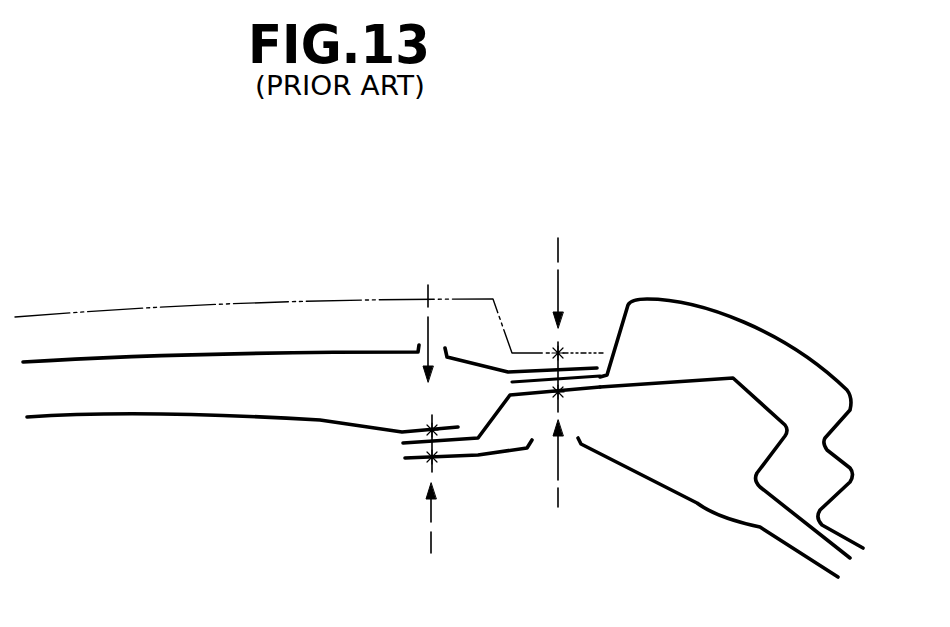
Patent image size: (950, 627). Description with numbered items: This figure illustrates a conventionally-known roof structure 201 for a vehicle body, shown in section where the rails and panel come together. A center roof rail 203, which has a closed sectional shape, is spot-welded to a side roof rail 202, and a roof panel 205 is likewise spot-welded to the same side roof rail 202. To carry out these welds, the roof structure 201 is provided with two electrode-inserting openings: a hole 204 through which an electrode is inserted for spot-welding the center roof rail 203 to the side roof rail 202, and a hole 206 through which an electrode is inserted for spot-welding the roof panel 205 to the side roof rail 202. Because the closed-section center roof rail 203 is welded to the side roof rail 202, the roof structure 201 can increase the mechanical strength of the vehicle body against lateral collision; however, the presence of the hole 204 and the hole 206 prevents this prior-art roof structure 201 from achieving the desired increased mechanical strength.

The roof structure 201 is at (571, 156).
The side roof rail 202 is at (744, 357).
The center roof rail 203 is at (140, 340).
The hole 204 is at (427, 342).
The roof panel 205 is at (232, 302).
The hole 206 is at (540, 450).